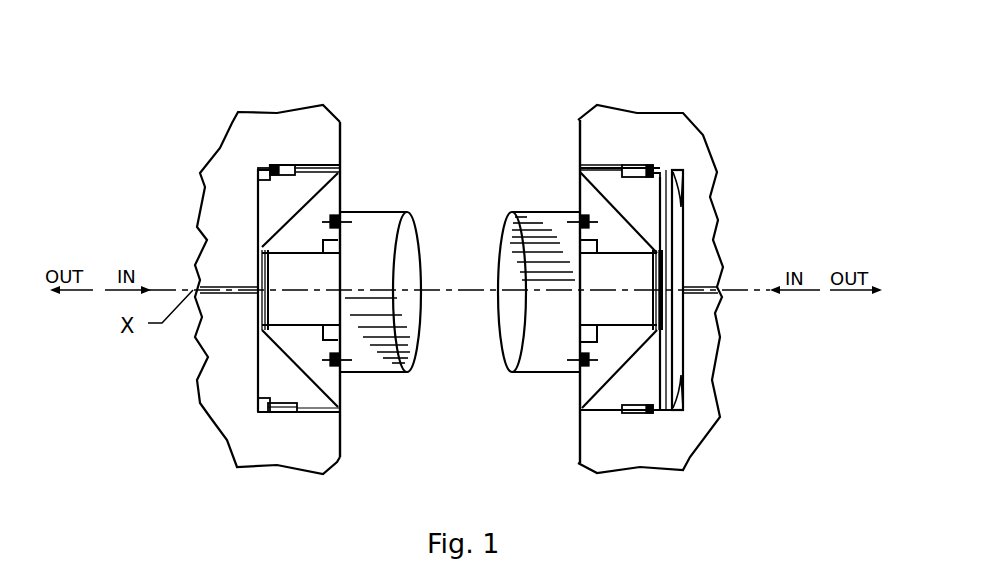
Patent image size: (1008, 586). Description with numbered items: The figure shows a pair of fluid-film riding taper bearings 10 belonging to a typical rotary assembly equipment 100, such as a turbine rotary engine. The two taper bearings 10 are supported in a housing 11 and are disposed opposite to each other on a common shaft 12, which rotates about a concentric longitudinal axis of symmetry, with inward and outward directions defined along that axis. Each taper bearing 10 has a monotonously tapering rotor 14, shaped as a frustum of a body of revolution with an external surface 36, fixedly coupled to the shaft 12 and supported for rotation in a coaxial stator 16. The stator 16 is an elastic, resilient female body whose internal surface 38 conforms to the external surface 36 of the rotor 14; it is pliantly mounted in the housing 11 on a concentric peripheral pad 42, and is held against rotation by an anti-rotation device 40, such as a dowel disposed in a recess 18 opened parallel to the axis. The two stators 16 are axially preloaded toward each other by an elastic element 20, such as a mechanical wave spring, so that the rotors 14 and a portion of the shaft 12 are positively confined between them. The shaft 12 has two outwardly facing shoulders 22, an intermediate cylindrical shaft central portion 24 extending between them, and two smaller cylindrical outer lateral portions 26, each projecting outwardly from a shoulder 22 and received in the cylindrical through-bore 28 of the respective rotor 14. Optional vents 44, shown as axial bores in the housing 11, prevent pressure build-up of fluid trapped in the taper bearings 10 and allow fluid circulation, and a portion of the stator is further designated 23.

The rotary assembly equipment 100 is at (555, 40).
The fluid-film riding taper bearing 10 is at (459, 289).
The housing 11 is at (490, 127).
The shaft 12 is at (407, 327).
The monotonously tapering rotor 14 is at (333, 203).
The stator 16 is at (273, 202).
The recess 18 is at (433, 403).
The elastic element 20 is at (673, 388).
The outwardly facing shoulder 22 is at (453, 329).
The housing portion 23 is at (658, 227).
The shaft central portion 24 is at (533, 357).
The cylindrical outer lateral portion 26 is at (280, 275).
The cylindrical through-bore 28 is at (242, 304).
The external surface 36 is at (581, 380).
The internal surface 38 is at (623, 370).
The anti-rotation device 40 is at (643, 165).
The pliant support element 42 is at (660, 177).
The vent 44 is at (223, 293).